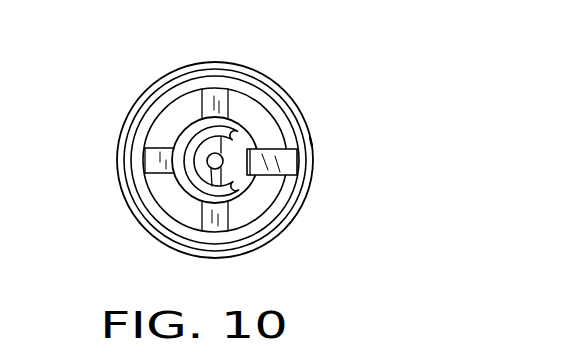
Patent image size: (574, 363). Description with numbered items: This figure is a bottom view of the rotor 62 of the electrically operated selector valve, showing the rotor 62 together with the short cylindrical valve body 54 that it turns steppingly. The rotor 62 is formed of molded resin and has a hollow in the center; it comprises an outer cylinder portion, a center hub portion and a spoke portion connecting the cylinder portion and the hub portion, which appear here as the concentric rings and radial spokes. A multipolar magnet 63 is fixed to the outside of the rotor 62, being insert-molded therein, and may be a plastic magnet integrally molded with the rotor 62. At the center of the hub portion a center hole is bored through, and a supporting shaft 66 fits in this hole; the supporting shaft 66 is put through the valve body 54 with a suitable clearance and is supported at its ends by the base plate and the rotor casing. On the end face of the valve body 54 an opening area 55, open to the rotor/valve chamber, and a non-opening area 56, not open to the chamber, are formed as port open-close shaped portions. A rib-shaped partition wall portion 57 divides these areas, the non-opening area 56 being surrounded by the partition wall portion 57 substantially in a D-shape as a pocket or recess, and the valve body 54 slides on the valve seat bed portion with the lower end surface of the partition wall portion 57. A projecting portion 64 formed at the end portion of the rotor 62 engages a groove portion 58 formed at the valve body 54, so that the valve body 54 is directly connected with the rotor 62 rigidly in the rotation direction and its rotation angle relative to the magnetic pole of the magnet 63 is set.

The valve body 54 is at (252, 121).
The opening area 55 is at (284, 140).
The non-opening area 56 is at (207, 161).
The partition wall portion 57 is at (185, 128).
The groove portion 58 is at (256, 151).
The rotor 62 is at (311, 142).
The multipolar magnet 63 is at (262, 80).
The projecting portion 64 is at (283, 210).
The supporting shaft 66 is at (219, 167).